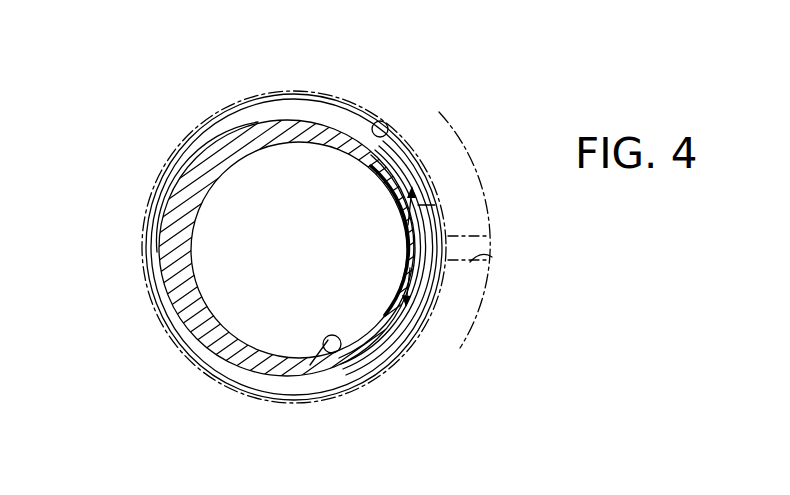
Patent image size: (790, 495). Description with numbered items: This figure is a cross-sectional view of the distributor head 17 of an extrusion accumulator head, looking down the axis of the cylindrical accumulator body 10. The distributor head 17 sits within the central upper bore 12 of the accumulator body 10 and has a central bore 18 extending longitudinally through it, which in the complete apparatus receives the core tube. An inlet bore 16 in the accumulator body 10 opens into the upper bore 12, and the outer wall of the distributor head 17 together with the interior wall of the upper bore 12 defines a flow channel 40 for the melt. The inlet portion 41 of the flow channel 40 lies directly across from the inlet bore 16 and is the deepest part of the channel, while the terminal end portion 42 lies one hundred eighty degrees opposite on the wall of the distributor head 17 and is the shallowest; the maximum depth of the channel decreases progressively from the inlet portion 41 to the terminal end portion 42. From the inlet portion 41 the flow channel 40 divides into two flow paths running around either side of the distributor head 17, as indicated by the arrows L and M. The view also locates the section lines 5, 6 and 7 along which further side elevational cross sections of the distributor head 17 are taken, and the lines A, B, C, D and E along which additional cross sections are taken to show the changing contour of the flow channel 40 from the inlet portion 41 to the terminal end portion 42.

The accumulator body 10 is at (462, 344).
The central upper bore 12 is at (376, 147).
The inlet bore 16 is at (493, 259).
The distributor head 17 is at (253, 363).
The central bore 18 is at (338, 352).
The flow channel 40 is at (252, 112).
The inlet portion 41 is at (408, 243).
The terminal end portion 42 is at (175, 246).
The section line 5- 5 is at (412, 131).
The section line 6- 6 is at (293, 107).
The section line 7- 7 is at (182, 72).
The section line A is at (378, 247).
The section line B is at (400, 352).
The section line C is at (293, 350).
The section line D is at (205, 335).
The section line E is at (178, 245).
The flow arrow L is at (405, 230).
The flow arrow M is at (422, 278).